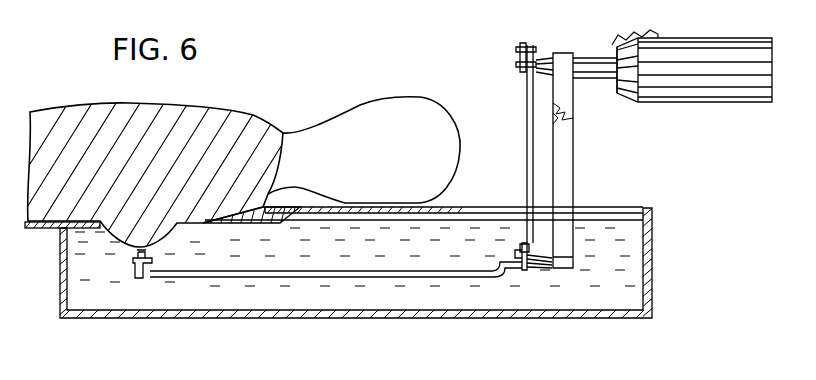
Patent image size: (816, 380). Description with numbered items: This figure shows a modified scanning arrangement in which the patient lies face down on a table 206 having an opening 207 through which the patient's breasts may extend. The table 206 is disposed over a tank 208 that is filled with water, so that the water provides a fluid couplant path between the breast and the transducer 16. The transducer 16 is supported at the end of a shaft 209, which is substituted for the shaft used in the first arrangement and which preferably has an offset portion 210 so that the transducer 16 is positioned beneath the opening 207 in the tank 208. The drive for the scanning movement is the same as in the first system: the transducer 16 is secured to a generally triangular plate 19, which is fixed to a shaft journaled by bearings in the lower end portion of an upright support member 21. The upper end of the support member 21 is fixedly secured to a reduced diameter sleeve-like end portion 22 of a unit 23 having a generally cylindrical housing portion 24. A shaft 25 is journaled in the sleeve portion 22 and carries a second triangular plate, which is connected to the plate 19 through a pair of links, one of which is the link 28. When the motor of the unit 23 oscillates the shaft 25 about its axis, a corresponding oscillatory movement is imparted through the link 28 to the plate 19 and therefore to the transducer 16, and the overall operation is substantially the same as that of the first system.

The transducer 16 is at (142, 282).
The plate 19 is at (521, 246).
The upright support member 21 is at (565, 173).
The sleeve-like end portion 22 is at (583, 75).
The unit 23 is at (676, 111).
The cylindrical housing portion 24 is at (728, 90).
The shaft 25 is at (519, 62).
The link 28 is at (526, 130).
The table 206 is at (47, 228).
The opening 207 is at (102, 235).
The tank 208 is at (138, 309).
The shaft 209 is at (513, 263).
The offset portion 210 is at (436, 283).